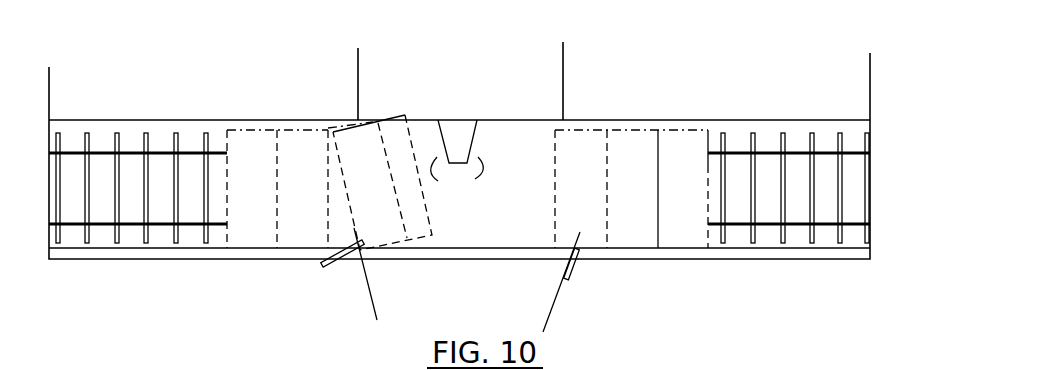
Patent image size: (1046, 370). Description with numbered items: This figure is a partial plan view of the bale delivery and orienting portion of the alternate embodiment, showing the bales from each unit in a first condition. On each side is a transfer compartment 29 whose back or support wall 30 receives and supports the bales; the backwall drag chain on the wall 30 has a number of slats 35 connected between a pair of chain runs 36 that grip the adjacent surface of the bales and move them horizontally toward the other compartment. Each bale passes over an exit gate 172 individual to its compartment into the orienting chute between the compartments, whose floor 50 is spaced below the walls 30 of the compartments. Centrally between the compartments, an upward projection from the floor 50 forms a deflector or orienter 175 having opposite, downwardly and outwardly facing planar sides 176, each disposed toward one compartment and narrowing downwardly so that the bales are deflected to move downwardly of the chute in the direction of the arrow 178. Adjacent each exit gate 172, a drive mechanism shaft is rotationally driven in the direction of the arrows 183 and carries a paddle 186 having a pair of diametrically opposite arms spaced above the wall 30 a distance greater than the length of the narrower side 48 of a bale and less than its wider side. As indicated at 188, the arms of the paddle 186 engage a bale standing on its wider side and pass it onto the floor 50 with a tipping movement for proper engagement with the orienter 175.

The transfer compartment 29 is at (484, 143).
The back or support wall 30 is at (193, 68).
The slats 35 is at (842, 192).
The chain runs 36 is at (850, 157).
The narrower side of a bale 48 is at (265, 197).
The floor of the chute 50 is at (520, 198).
The exit gate 172 is at (335, 108).
The deflector or orienter 175 is at (457, 132).
The planar sides of the orienter 176 is at (457, 175).
The arrow indicating bale direction 178 is at (455, 297).
The arrows indicating shaft rotation 183 is at (345, 272).
The paddle 186 is at (323, 265).
The engagement of paddle arms with bale 188 is at (585, 240).